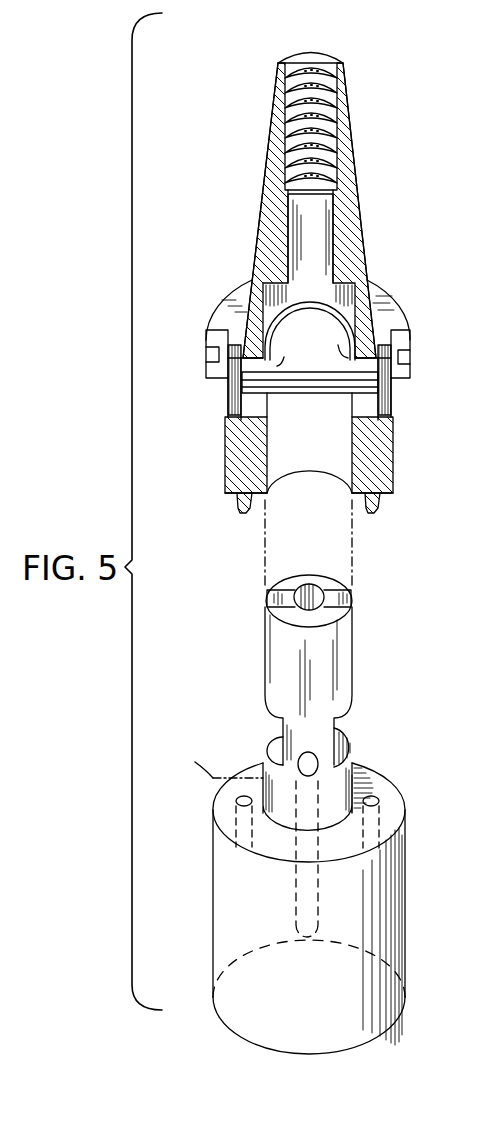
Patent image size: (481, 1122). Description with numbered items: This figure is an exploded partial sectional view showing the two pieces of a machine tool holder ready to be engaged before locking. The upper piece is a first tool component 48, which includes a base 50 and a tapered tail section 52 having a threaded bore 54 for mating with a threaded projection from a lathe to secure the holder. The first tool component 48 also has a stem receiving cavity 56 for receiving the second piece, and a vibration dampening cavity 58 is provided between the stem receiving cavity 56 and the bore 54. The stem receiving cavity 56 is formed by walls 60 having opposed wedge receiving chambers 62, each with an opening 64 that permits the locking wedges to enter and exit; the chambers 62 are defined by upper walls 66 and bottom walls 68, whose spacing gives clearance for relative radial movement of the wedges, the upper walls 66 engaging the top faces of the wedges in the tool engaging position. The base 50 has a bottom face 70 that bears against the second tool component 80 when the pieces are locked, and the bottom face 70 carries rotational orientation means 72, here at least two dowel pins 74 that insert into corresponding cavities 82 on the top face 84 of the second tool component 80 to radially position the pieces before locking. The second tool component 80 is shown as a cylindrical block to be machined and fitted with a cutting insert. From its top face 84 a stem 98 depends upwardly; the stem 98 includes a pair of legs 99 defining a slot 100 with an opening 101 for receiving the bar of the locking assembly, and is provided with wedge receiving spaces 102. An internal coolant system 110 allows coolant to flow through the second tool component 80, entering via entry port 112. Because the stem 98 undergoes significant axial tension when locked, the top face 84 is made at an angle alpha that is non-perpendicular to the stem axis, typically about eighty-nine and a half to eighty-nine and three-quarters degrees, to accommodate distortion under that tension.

The first tool component 48 is at (222, 252).
The base 50 is at (400, 300).
The tapered tail section 52 is at (356, 143).
The threaded bore 54 is at (312, 54).
The stem receiving cavity 56 is at (248, 327).
The vibration dampening cavity 58 is at (340, 304).
The walls 60 is at (229, 340).
The wedge receiving chambers 62 is at (312, 344).
The opening 64 is at (346, 398).
The upper walls 66 is at (402, 343).
The bottom walls 68 is at (386, 430).
The bottom face 70 is at (235, 496).
The rotational orientation means 72 is at (230, 522).
The dowel pins 74 is at (247, 513).
The second tool component 80 is at (205, 832).
The cavities 82 is at (242, 797).
The top face 84 is at (368, 766).
The stem 98 is at (362, 662).
The legs 99 is at (280, 586).
The slot 100 is at (350, 591).
The opening 101 is at (303, 588).
The wedge receiving spaces 102 is at (345, 725).
The internal coolant system 110 is at (296, 877).
The entry port 112 is at (304, 757).